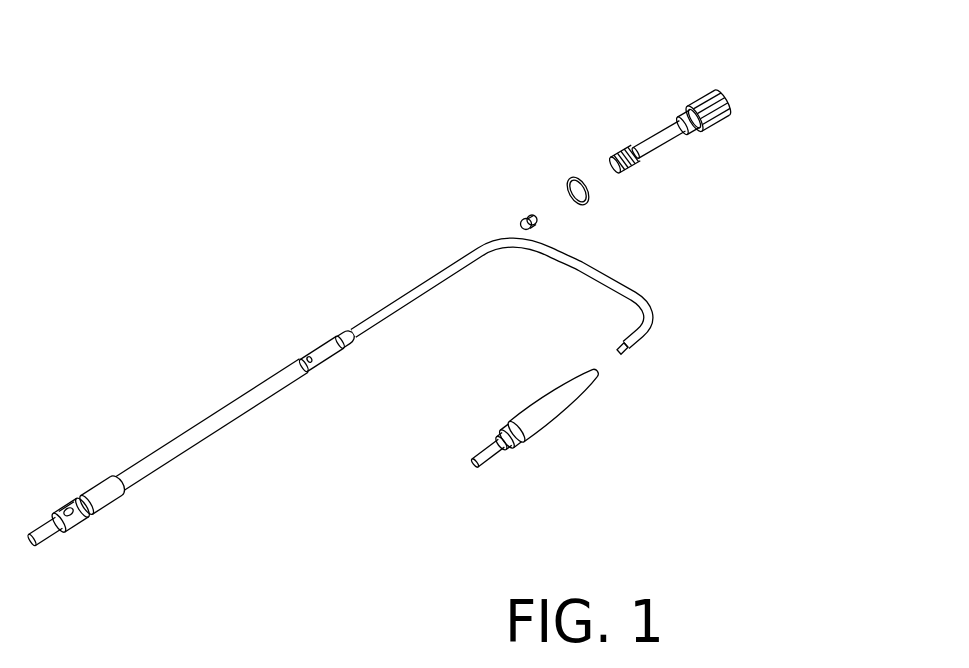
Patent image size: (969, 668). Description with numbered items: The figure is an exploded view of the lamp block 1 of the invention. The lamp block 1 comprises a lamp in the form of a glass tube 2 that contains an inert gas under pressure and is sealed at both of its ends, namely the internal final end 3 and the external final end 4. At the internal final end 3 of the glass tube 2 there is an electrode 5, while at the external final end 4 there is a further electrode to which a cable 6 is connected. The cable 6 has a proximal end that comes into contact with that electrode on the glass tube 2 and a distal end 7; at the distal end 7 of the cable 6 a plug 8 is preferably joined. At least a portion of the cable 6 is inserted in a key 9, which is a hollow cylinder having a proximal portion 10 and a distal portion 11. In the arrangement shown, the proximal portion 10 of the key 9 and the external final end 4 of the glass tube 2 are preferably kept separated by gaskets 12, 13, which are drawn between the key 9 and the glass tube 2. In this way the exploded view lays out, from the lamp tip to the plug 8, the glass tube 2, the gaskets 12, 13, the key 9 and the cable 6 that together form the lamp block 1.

The lamp block 1 is at (281, 296).
The glass tube 2 is at (234, 441).
The internal final end 3 is at (105, 528).
The external final end 4 is at (345, 383).
The electrode 5 is at (60, 555).
The cable 6 is at (368, 286).
The distal end 7 is at (673, 346).
The plug 8 is at (580, 433).
The key 9 is at (711, 132).
The proximal portion 10 is at (643, 188).
The distal portion 11 is at (736, 143).
The gasket 12 is at (558, 166).
The gasket 13 is at (508, 208).